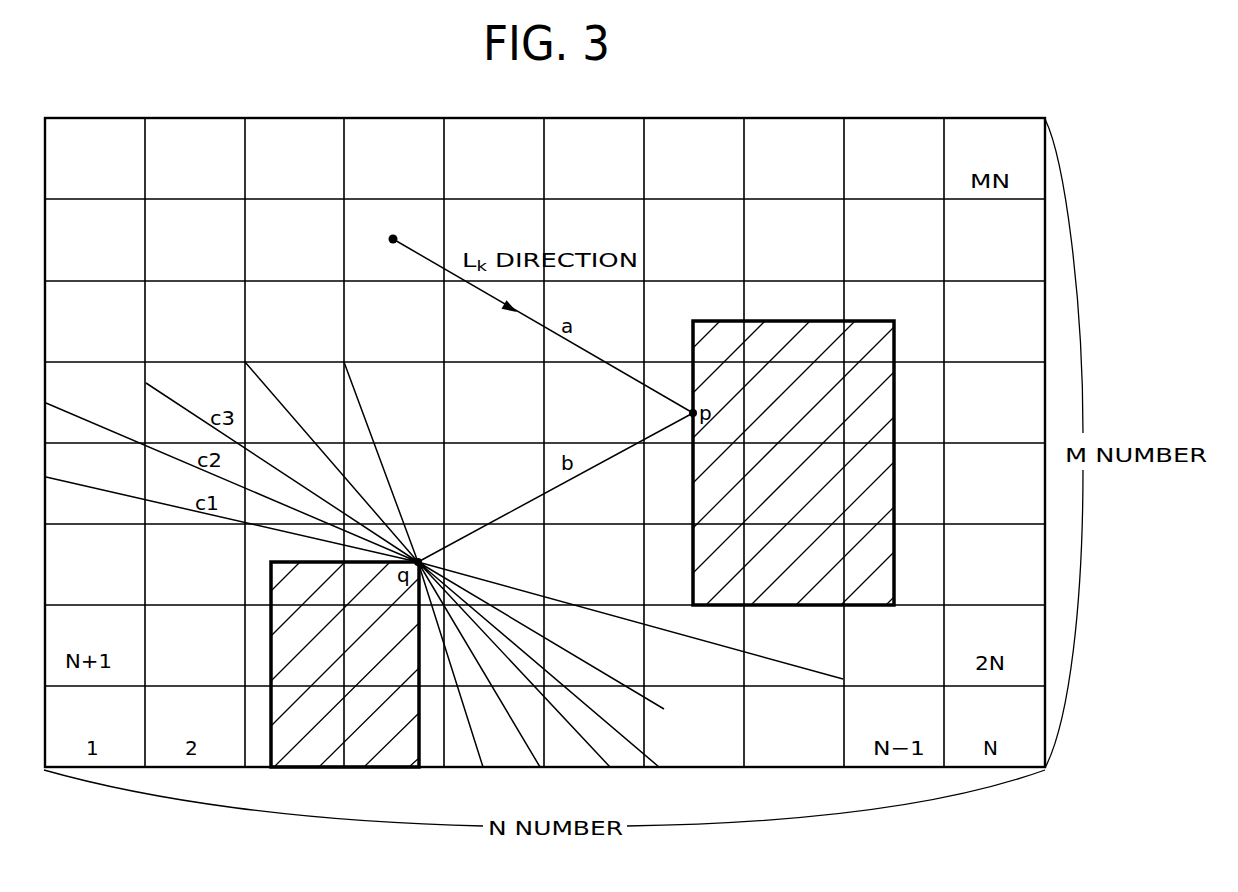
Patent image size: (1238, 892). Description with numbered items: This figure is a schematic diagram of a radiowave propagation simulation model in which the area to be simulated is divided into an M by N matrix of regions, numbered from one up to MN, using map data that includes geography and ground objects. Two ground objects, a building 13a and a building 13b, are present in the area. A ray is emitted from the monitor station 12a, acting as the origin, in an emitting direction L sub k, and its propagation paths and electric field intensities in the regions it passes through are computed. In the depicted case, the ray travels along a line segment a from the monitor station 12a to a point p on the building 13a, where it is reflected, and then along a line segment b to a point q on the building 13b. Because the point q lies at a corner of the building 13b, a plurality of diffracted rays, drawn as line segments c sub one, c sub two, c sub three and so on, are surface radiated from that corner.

The monitor station 12a is at (393, 239).
The building 13a is at (787, 330).
The building 13b is at (308, 745).